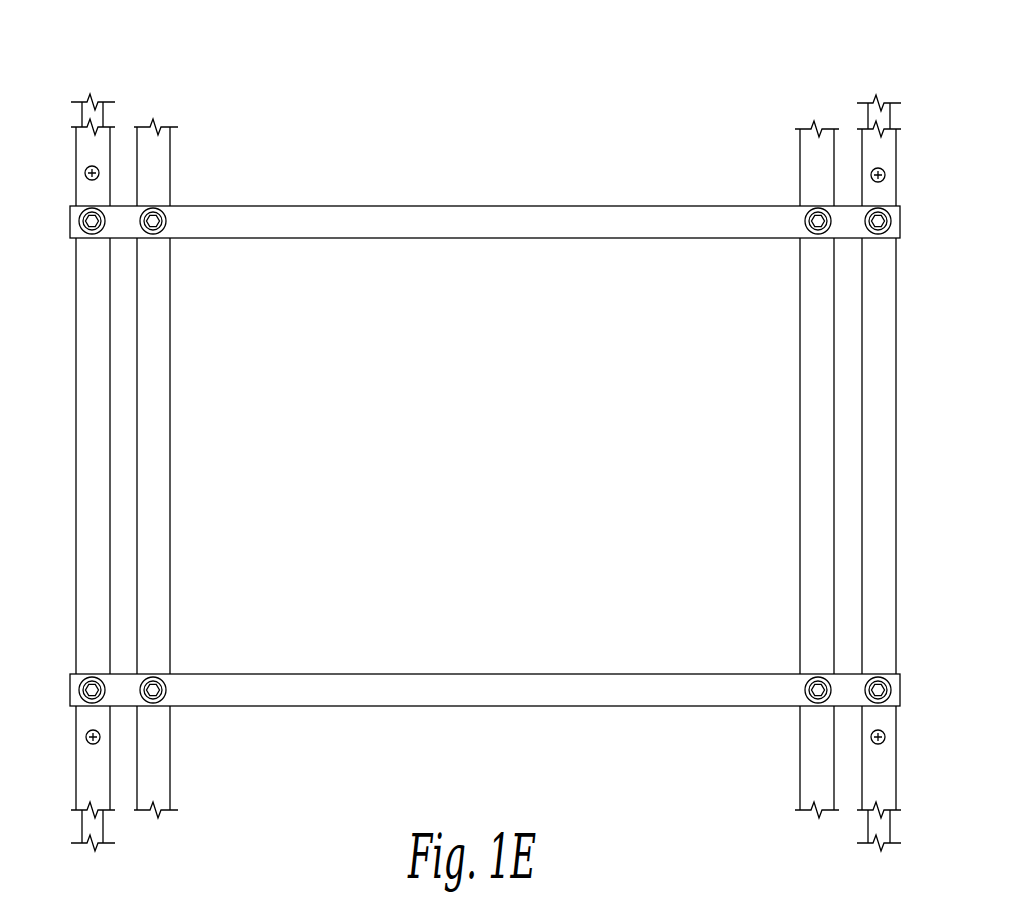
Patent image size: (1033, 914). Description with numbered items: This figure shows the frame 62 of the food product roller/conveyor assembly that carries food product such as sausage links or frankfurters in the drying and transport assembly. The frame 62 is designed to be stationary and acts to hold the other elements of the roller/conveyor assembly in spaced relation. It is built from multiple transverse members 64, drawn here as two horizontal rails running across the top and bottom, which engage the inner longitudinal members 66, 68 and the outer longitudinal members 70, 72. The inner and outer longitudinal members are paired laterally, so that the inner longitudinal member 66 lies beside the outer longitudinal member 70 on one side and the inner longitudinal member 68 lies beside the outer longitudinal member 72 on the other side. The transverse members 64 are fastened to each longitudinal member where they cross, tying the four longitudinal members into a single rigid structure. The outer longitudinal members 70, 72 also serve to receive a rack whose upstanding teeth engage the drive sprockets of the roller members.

The frame 62 is at (360, 126).
The transverse member 64 is at (483, 207).
The inner longitudinal member 66 is at (172, 449).
The inner longitudinal member 68 is at (800, 458).
The outer longitudinal member 70 is at (76, 510).
The outer longitudinal member 72 is at (896, 490).